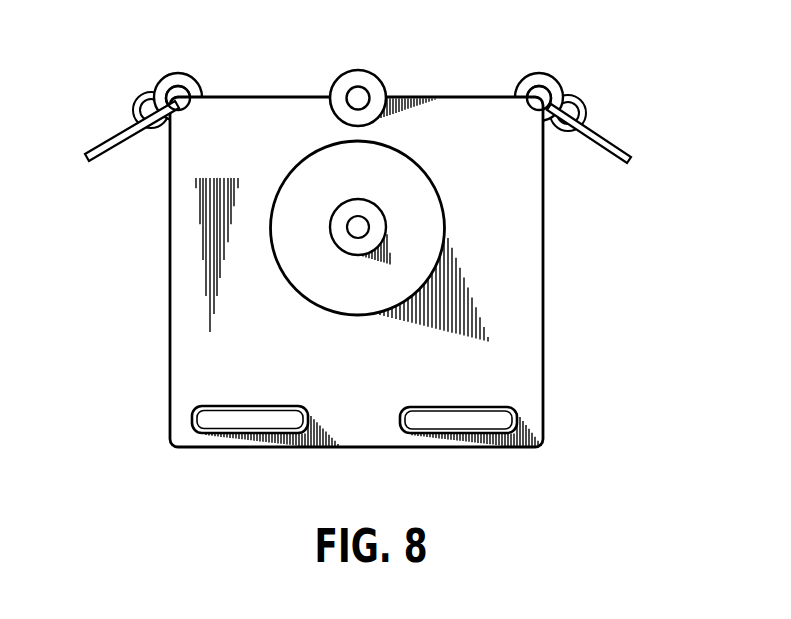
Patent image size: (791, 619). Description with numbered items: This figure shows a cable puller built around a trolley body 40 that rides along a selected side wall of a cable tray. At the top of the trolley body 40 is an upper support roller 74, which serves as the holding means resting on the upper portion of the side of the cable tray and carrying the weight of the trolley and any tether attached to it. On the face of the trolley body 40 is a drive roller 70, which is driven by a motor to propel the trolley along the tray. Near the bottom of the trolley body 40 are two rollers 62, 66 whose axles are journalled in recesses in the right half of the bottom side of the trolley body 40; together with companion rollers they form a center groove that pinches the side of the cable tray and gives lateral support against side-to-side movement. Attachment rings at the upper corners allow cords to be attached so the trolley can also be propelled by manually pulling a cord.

The trolley body 40 is at (197, 172).
The roller 62 is at (217, 420).
The roller 66 is at (437, 422).
The drive roller 70 is at (287, 240).
The upper support roller 74 is at (375, 90).